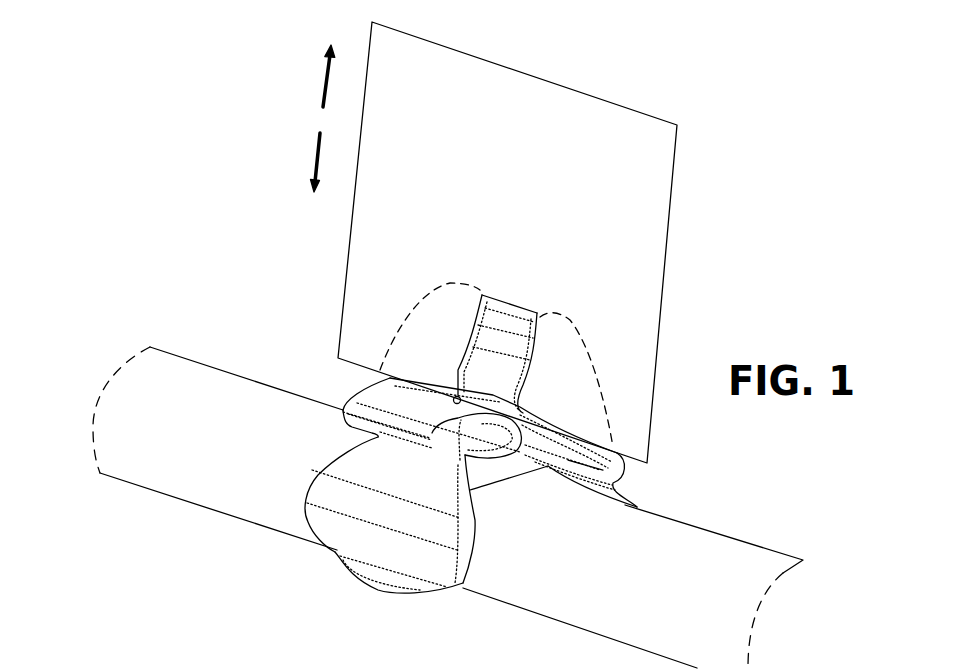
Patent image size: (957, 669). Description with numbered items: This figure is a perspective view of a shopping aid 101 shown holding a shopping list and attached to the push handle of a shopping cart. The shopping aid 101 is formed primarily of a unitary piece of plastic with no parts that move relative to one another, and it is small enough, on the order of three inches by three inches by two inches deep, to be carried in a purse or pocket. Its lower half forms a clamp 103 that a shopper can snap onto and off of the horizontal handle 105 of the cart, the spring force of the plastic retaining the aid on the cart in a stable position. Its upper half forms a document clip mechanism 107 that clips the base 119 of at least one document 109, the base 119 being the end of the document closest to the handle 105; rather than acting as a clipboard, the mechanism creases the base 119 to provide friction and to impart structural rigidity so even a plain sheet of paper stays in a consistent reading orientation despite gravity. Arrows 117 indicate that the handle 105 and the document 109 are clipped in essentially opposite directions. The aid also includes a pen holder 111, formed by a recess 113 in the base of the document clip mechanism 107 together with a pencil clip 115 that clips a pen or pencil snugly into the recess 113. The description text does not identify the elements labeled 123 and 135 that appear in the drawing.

The shopping aid 101 is at (432, 307).
The clamp 103 is at (336, 440).
The handle 105 is at (723, 535).
The document clip mechanism 107 is at (538, 369).
The document 109 is at (672, 184).
The pen holder 111 is at (566, 479).
The recess 113 is at (617, 475).
The pencil clip 115 is at (458, 418).
The arrows 117 is at (323, 100).
The base 119 is at (347, 372).
The base 123 is at (282, 661).
The fastener 135 is at (427, 668).